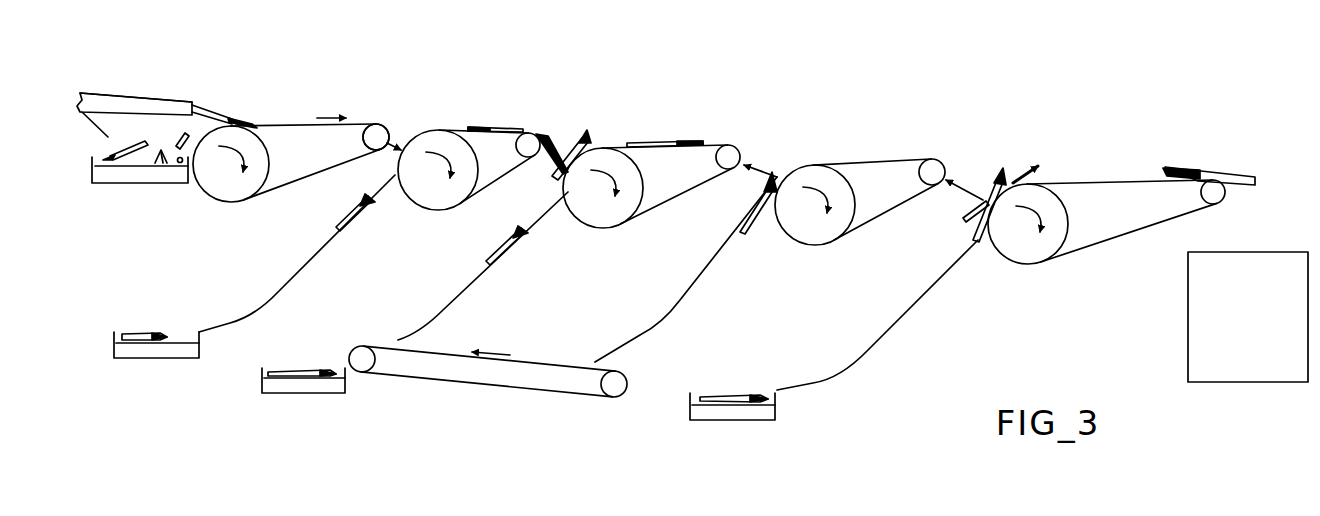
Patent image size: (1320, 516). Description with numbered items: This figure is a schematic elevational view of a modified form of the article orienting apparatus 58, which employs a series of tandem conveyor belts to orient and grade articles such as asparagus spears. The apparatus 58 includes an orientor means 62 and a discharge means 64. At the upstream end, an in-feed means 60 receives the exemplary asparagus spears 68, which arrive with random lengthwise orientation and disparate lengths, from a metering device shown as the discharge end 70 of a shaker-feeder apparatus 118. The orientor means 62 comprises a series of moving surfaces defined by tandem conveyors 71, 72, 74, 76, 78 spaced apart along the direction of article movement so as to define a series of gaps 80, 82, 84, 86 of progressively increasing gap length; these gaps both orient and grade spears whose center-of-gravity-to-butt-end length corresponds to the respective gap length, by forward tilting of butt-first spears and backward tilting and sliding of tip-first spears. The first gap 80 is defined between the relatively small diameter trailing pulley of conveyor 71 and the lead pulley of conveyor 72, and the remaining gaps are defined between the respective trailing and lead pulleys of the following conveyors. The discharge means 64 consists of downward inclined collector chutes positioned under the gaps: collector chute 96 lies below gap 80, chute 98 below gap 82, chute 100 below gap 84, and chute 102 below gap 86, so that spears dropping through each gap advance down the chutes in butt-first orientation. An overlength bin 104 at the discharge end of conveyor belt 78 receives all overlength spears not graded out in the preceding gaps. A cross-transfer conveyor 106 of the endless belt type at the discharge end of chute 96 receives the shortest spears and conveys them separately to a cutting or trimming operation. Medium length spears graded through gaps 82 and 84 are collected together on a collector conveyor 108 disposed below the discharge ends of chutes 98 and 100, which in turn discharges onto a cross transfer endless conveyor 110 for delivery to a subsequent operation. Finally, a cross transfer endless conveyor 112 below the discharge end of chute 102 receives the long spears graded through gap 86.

The article orienting apparatus 58 is at (1145, 85).
The in-feed means 60 is at (157, 91).
The orientor means 62 is at (636, 109).
The discharge means 64 is at (186, 329).
The asparagus spears 68 is at (229, 117).
The discharge end 70 is at (194, 105).
The conveyor 71 is at (290, 104).
The conveyor 72 is at (447, 129).
The conveyor 74 is at (711, 144).
The conveyor 76 is at (878, 162).
The conveyor belt 78 is at (1107, 182).
The first gap 80 is at (393, 148).
The gap 82 is at (551, 161).
The gap 84 is at (758, 176).
The gap 86 is at (965, 186).
The collector chute 96 is at (300, 273).
The chute 98 is at (467, 288).
The chute 100 is at (682, 300).
The chute 102 is at (906, 312).
The overlength bin 104 is at (1226, 252).
The cross-transfer conveyor 106 is at (178, 358).
The collector conveyor 108 is at (622, 374).
The cross transfer endless conveyor 110 is at (322, 395).
The cross transfer endless conveyor 112 is at (778, 418).
The shaker-feeder apparatus 118 is at (115, 93).